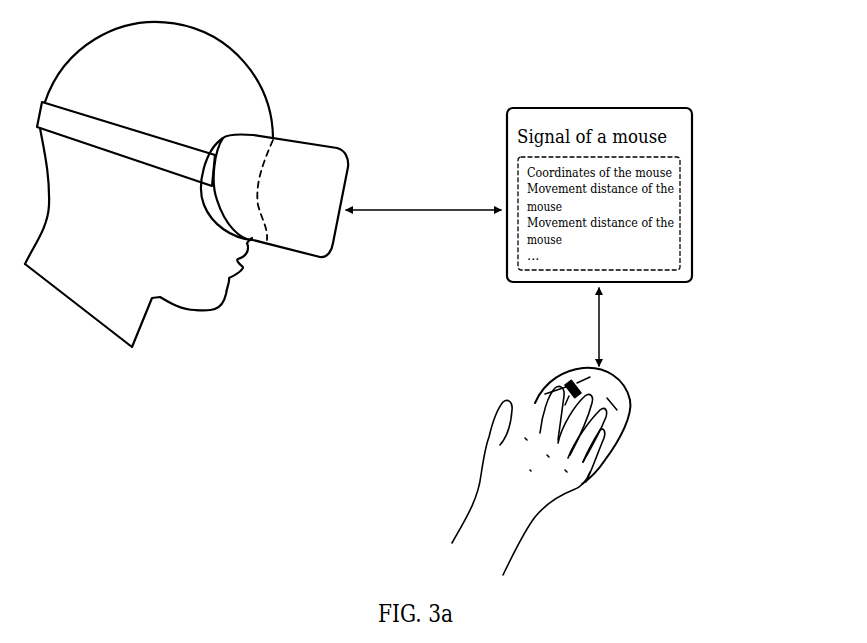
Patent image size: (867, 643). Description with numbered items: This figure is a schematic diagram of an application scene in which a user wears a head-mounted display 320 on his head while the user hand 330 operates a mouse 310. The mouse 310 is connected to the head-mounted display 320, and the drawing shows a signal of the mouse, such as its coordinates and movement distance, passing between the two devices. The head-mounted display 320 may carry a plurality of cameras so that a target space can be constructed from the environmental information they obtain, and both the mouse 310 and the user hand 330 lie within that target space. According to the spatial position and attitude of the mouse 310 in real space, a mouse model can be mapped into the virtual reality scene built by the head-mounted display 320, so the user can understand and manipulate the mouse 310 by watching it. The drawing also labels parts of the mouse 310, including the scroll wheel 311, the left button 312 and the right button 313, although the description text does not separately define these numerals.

The mouse 310 is at (620, 380).
The scroll wheel of the mouse 311 is at (567, 377).
The left button of the mouse 312 is at (543, 400).
The right button of the mouse 313 is at (607, 398).
The head-mounted display 320 is at (300, 160).
The user hand 330 is at (520, 473).